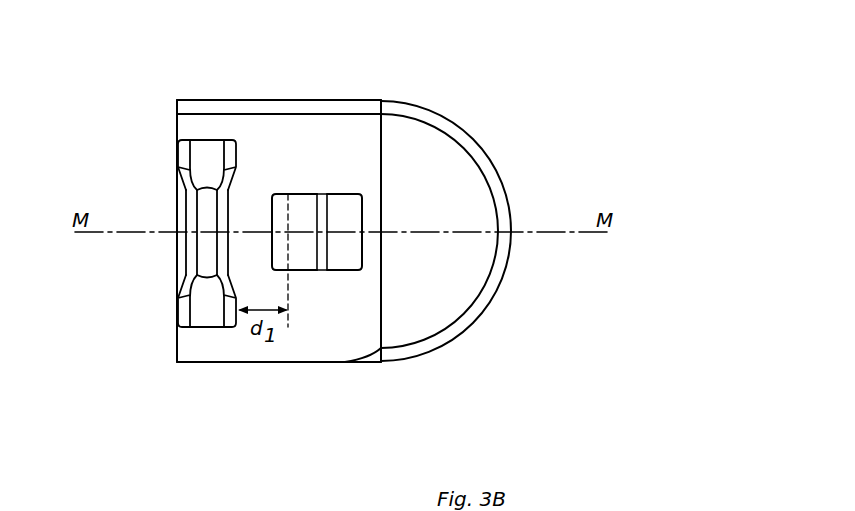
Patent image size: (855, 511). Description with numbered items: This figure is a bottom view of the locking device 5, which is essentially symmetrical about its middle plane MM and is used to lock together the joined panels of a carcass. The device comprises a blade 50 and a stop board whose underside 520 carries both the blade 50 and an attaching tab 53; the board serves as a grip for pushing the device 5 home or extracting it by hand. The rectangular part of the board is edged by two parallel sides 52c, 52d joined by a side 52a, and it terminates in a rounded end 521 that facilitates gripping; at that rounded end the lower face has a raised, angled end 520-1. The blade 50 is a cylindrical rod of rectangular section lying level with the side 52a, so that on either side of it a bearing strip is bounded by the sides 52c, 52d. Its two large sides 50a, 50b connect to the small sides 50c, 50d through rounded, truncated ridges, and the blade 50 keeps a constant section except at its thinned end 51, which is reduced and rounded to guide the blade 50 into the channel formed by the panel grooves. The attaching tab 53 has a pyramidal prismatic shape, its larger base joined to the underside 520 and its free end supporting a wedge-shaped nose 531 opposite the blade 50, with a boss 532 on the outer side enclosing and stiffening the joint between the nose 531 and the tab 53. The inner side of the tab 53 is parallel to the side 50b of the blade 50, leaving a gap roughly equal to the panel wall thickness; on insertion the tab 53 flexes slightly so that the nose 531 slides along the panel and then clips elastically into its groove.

The locking device 5 is at (275, 76).
The side 52c is at (225, 98).
The underside 520 is at (283, 130).
The rounded end 521 is at (452, 122).
The end of the lower face 520-1 is at (445, 170).
The small side 50d is at (206, 140).
The blade 50 is at (78, 247).
The large side 50a is at (179, 248).
The thinned end 51 is at (210, 253).
The large side 50b is at (250, 262).
The side 52a is at (177, 349).
The small side 50c is at (212, 327).
The side 52d is at (238, 363).
The nose 531 is at (278, 260).
The boss 532 is at (348, 257).
The attaching tab 53 is at (365, 324).